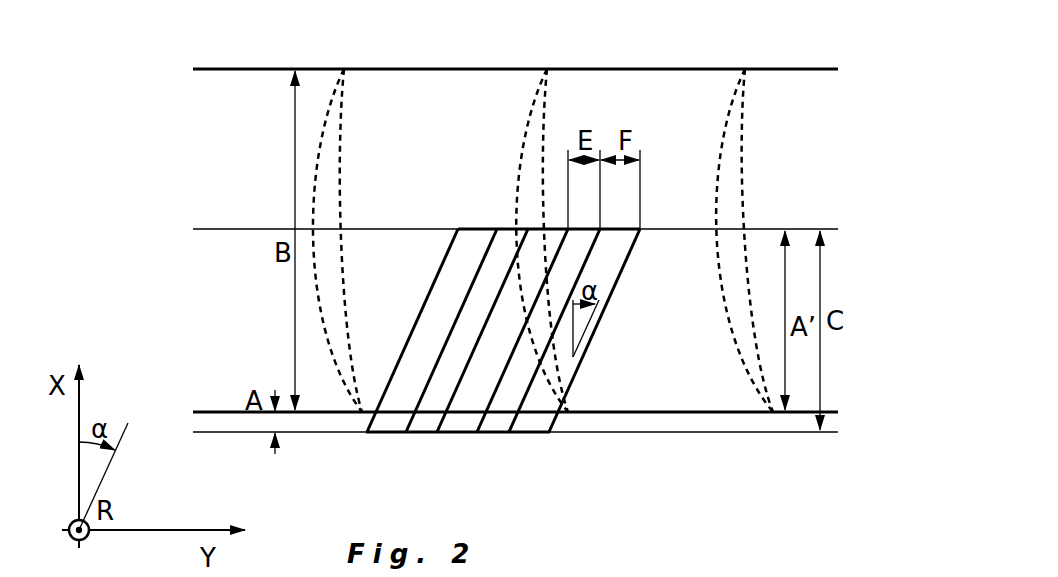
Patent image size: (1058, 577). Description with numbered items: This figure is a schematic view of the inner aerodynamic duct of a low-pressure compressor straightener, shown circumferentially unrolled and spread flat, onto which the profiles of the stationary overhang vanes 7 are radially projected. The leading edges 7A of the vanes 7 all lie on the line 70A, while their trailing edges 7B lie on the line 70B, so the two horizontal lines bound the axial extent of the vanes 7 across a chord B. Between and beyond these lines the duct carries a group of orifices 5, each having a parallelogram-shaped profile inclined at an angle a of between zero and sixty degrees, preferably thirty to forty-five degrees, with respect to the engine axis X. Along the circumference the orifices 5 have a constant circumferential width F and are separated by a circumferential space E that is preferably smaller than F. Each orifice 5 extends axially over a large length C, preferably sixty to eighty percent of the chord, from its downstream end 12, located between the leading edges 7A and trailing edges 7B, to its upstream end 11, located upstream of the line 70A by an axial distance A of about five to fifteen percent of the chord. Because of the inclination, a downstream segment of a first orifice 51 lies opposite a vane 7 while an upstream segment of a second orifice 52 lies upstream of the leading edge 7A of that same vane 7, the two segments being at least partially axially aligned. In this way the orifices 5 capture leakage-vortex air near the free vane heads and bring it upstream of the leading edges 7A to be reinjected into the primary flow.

The orifices 5 is at (503, 341).
The first orifice 51 is at (462, 433).
The second orifice 52 is at (528, 433).
The vane 7 is at (328, 128).
The leading edge 7A is at (366, 414).
The trailing edge 7B is at (350, 68).
The upstream end 11 is at (551, 434).
The downstream end 12 is at (648, 229).
The line 70A is at (836, 410).
The line 70B is at (807, 70).